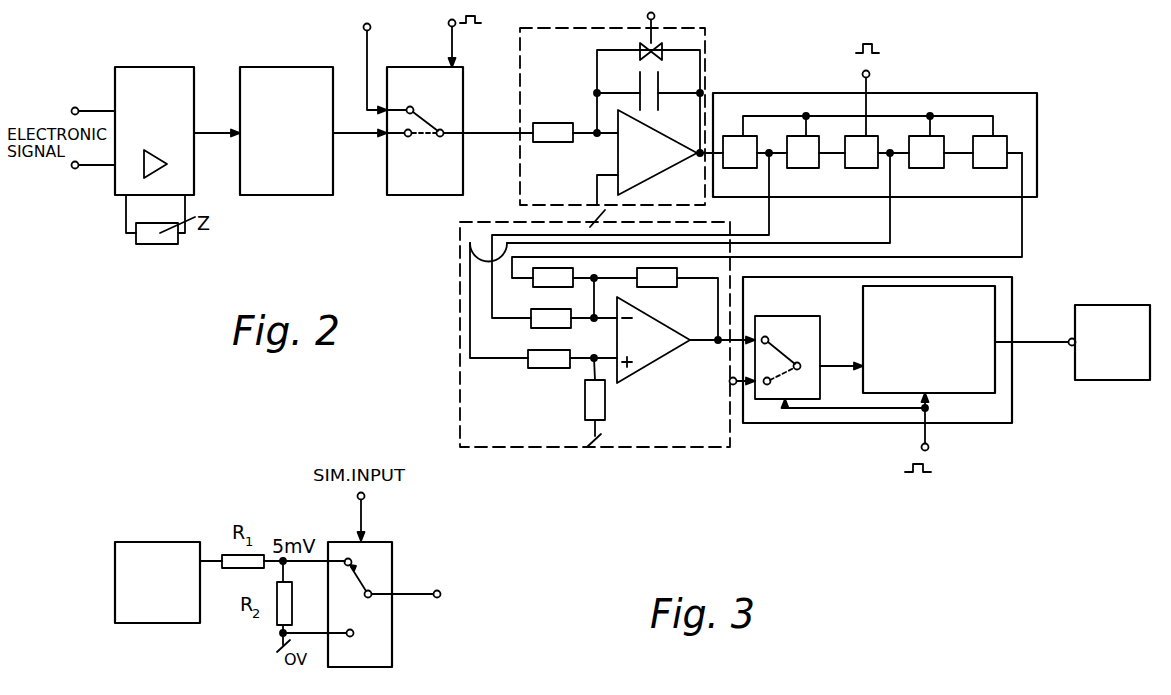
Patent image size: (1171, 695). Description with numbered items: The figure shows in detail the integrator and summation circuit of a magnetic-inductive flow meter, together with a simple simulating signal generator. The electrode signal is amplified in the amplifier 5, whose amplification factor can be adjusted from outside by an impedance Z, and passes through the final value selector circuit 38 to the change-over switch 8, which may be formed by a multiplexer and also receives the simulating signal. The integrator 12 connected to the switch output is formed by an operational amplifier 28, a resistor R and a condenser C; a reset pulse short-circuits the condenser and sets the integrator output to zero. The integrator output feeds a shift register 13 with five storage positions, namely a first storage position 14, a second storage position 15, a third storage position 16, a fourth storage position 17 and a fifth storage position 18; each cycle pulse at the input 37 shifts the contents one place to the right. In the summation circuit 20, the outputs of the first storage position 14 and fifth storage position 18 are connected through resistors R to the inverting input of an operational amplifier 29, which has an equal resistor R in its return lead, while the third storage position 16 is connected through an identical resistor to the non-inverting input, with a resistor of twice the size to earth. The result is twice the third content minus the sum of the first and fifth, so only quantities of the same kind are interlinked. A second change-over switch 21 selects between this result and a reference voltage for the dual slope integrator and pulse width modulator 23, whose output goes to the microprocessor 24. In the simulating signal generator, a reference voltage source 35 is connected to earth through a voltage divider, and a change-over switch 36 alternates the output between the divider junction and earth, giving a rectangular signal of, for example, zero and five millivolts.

In FIG. 2, the amplifier 5 is at (159, 82).
In FIG. 2, the final value selector circuit 38 is at (273, 82).
In FIG. 2, the change-over switch 8 is at (450, 85).
In FIG. 2, the integrator 12 is at (616, 114).
In FIG. 2, the operational amplifier 28 is at (642, 168).
In FIG. 2, the shift register 13 is at (892, 114).
In FIG. 2, the first storage position 14 is at (737, 148).
In FIG. 2, the second storage position 15 is at (798, 148).
In FIG. 2, the third storage position 16 is at (862, 148).
In FIG. 2, the fourth storage position 17 is at (933, 148).
In FIG. 2, the fifth storage position 18 is at (987, 148).
In FIG. 2, the input 37 is at (871, 74).
In FIG. 2, the summation circuit 20 is at (576, 334).
In FIG. 2, the operational amplifier 29 is at (645, 352).
In FIG. 2, the second change-over switch 21 is at (797, 327).
In FIG. 2, the dual slope integrator and pulse width modulator 23 is at (903, 349).
In FIG. 2, the microprocessor 24 is at (1113, 372).
In FIG. 3, the reference voltage source 35 is at (151, 550).
In FIG. 3, the change-over switch 36 is at (380, 556).